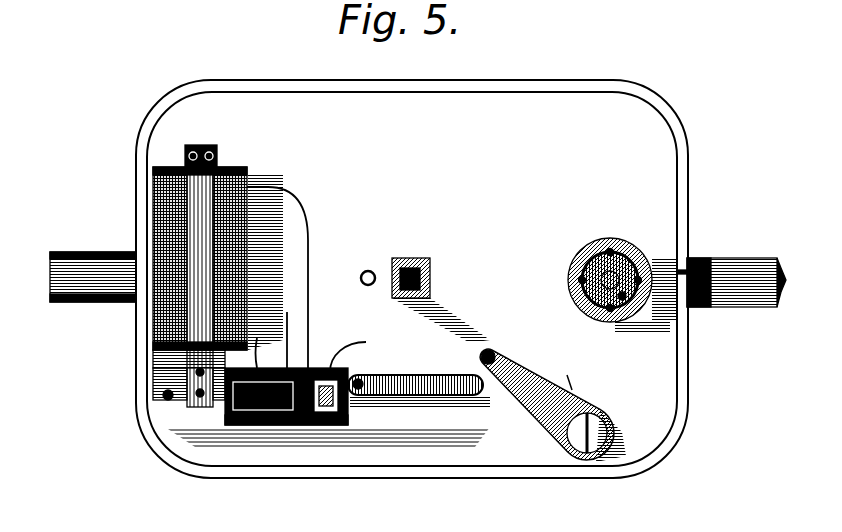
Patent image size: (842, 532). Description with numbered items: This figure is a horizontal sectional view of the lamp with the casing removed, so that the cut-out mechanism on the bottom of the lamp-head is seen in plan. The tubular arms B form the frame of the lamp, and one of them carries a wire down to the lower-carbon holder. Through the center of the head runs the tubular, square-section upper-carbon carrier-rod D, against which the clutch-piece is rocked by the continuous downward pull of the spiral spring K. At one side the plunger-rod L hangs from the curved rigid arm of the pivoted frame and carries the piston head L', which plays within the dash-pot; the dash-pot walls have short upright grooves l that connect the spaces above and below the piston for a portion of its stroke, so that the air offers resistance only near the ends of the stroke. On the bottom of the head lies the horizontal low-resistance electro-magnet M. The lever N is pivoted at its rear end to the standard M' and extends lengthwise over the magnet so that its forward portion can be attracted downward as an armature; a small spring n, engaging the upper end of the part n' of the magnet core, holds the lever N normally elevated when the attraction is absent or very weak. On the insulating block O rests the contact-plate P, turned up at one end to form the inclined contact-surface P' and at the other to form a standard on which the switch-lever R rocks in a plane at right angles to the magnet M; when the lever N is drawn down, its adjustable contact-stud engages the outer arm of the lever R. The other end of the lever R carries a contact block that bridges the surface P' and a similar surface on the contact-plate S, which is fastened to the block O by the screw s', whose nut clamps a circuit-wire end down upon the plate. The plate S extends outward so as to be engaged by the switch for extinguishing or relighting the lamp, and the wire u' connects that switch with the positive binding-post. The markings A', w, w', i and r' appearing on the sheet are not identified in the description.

The casing A' is at (412, 279).
The tubular arms B is at (418, 288).
The lever N is at (218, 258).
The standard M' is at (215, 146).
The low-resistance electro-magnet M is at (161, 360).
The small spring n is at (143, 387).
The part of the core of the magnet n' is at (201, 407).
The inclined contact-surface P' is at (275, 411).
The contact-plate P is at (266, 376).
The switch-lever R is at (174, 424).
The insulating block or plate O is at (294, 425).
The screw s' is at (351, 379).
The contact-plate S is at (317, 368).
The wire w is at (265, 352).
The wire w' is at (289, 277).
The spiral spring K is at (367, 268).
The upper-carbon carrier-rod D is at (441, 293).
The plunger-rod L is at (605, 286).
The piston head or plunger L' is at (588, 289).
The short upright grooves or channels l is at (632, 252).
The pin i is at (618, 326).
The arm r' is at (553, 405).
The wire u' is at (577, 383).